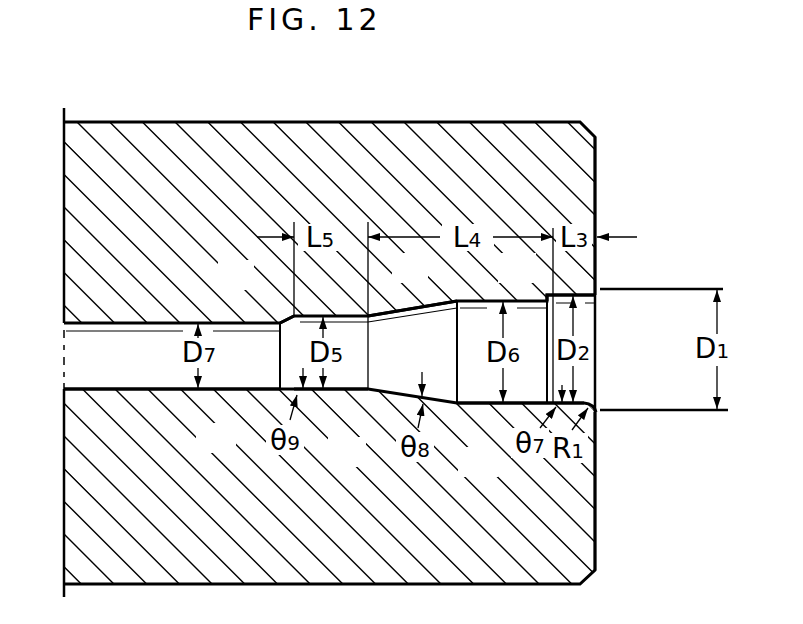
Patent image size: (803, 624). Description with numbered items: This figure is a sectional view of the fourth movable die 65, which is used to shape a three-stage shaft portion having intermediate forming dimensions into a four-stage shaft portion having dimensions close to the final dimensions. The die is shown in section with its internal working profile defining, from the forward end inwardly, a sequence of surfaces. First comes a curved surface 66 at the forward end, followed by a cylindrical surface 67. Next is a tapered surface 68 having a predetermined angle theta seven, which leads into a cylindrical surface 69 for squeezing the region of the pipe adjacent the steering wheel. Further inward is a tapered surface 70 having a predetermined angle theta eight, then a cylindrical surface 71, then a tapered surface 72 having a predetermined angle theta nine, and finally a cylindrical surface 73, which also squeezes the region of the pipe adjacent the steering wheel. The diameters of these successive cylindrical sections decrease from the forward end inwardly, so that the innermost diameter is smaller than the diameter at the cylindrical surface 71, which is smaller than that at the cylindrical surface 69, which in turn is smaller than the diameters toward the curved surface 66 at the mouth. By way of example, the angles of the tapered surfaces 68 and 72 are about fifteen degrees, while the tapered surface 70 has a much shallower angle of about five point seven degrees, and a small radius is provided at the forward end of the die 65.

The fourth movable die 65 is at (286, 128).
The curved surface 66 is at (596, 291).
The cylindrical surface 67 is at (587, 405).
The tapered surface 68 is at (547, 323).
The cylindrical surface 69 is at (476, 400).
The tapered surface 70 is at (421, 303).
The cylindrical surface 71 is at (356, 389).
The tapered surface 72 is at (283, 318).
The cylindrical surface 73 is at (236, 385).